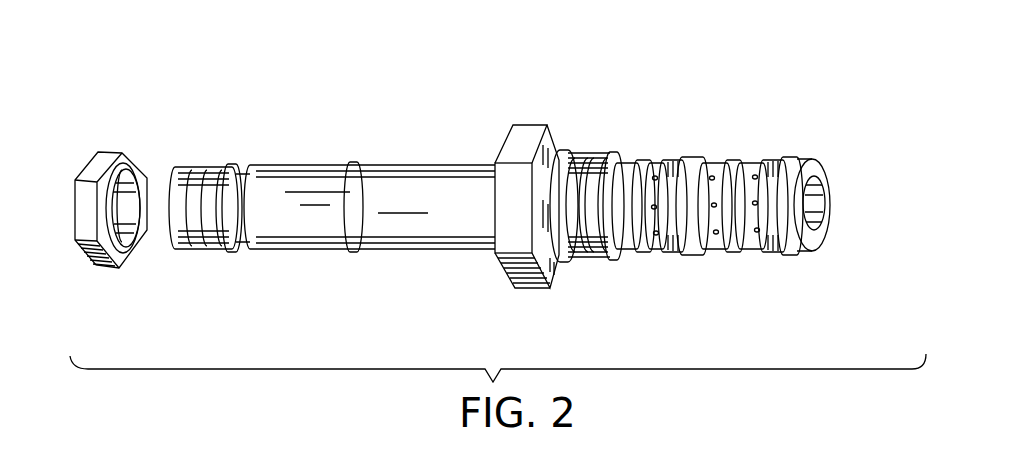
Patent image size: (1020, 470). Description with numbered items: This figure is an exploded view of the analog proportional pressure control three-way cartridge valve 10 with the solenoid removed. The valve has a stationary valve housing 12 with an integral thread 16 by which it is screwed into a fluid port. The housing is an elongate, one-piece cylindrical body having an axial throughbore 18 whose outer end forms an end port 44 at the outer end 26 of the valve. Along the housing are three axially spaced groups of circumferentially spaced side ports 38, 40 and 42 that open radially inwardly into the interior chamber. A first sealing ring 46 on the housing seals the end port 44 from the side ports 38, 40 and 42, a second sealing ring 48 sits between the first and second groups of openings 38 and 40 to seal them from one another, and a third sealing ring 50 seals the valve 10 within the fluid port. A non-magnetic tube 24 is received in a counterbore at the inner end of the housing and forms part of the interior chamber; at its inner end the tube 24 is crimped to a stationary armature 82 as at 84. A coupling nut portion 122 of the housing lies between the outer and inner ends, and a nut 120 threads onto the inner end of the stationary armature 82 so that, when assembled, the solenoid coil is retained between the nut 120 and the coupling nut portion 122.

The three-way cartridge valve 10 is at (755, 177).
The valve housing 12 is at (614, 176).
The integral thread 16 is at (595, 259).
The axial throughbore 18 is at (846, 183).
The non-magnetic tube 24 is at (369, 205).
The outer end 26 is at (825, 238).
The first group of side ports 38 is at (652, 245).
The second group of side ports 40 is at (722, 250).
The third group of side ports 42 is at (760, 247).
The end port 44 is at (813, 205).
The first sealing ring 46 is at (788, 157).
The second sealing ring 48 is at (688, 156).
The third sealing ring 50 is at (563, 150).
The stationary armature 82 is at (308, 242).
The crimp 84 is at (357, 166).
The nut 120 is at (108, 270).
The coupling nut portion 122 is at (513, 232).